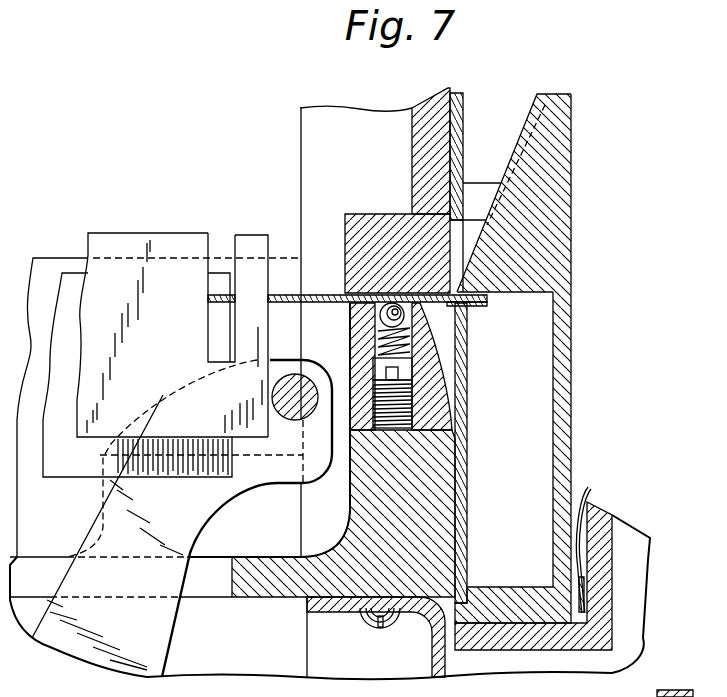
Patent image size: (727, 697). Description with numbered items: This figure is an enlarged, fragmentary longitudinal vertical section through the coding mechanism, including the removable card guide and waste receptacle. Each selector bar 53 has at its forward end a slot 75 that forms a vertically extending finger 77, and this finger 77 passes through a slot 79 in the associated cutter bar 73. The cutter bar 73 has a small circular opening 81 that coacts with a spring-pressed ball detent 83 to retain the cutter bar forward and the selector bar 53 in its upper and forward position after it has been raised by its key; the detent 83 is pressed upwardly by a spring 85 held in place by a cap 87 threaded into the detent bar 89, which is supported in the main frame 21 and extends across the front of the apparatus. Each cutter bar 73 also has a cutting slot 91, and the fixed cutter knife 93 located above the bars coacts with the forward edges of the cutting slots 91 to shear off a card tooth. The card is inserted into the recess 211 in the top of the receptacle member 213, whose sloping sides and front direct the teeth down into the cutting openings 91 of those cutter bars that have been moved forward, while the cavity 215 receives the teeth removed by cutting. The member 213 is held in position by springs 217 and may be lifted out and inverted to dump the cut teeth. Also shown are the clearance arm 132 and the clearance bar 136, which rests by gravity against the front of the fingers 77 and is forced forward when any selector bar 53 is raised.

The main frame 21 is at (430, 528).
The selector bar 53 is at (113, 262).
The cutter bar 73 is at (316, 295).
The slot 75 is at (218, 233).
The finger 77 is at (248, 243).
The slot 79 is at (262, 302).
The circular opening 81 is at (387, 293).
The ball detent 83 is at (380, 318).
The spring 85 is at (407, 342).
The cap 87 is at (413, 367).
The detent bar 89 is at (437, 408).
The cutting slot 91 is at (467, 306).
The fixed cutter knife 93 is at (395, 230).
The clearance arm 132 is at (160, 635).
The clearance bar 136 is at (272, 390).
The recess 211 is at (527, 112).
The receptacle member 213 is at (570, 125).
The cavity 215 is at (552, 469).
The spring 217 is at (577, 522).